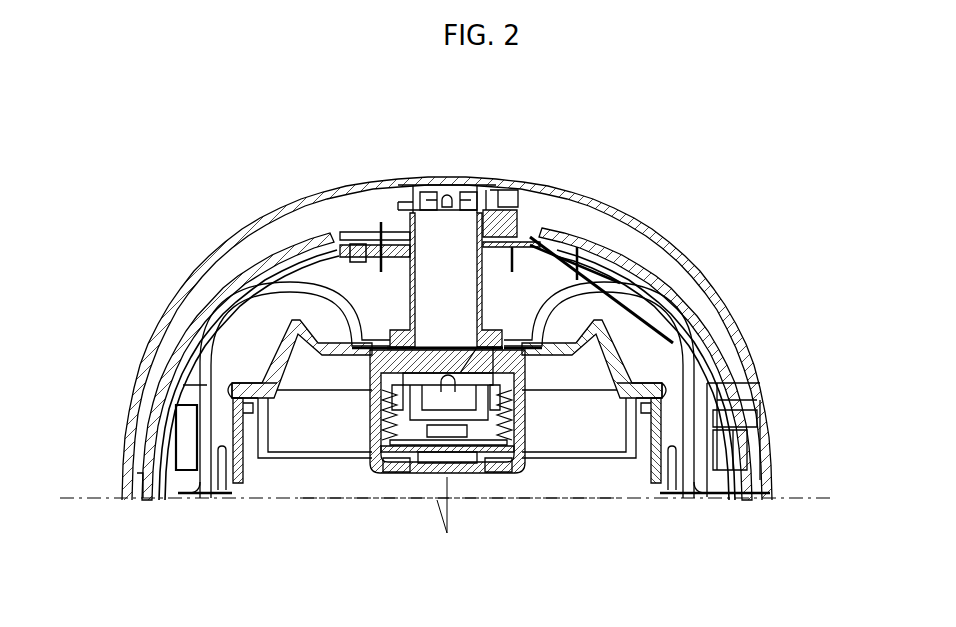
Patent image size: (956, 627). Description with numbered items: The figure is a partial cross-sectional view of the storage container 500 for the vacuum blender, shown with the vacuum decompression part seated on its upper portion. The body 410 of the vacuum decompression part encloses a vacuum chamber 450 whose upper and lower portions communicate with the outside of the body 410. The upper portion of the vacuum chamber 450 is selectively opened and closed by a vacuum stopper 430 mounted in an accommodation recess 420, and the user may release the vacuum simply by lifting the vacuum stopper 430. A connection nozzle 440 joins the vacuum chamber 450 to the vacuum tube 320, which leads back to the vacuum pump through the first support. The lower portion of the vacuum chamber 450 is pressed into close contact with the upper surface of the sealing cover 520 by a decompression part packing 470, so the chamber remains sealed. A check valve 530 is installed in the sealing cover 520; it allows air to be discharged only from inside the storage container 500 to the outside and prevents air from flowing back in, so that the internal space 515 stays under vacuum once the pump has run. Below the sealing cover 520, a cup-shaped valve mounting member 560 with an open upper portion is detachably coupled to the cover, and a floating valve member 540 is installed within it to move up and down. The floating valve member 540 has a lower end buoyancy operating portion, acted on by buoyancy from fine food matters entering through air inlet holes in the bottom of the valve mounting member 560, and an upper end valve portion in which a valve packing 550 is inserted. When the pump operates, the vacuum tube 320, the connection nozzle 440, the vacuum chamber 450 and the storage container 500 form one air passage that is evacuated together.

The vacuum tube 320 is at (196, 296).
The body 410 is at (262, 233).
The accommodation recess 420 is at (413, 184).
The vacuum stopper 430 is at (443, 178).
The connection nozzle 440 is at (368, 218).
The vacuum chamber 450 is at (458, 266).
The decompression part packing 470 is at (535, 310).
The storage container 500 is at (697, 500).
The internal space 515 is at (544, 486).
The sealing cover 520 is at (370, 360).
The check valve 530 is at (368, 438).
The floating valve member 540 is at (373, 474).
The valve packing 550 is at (480, 474).
The valve mounting member 560 is at (370, 425).